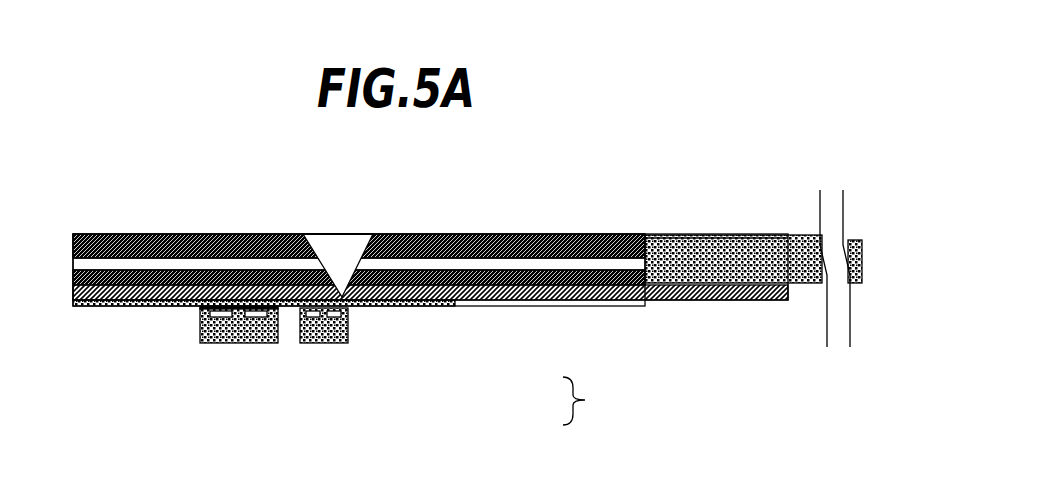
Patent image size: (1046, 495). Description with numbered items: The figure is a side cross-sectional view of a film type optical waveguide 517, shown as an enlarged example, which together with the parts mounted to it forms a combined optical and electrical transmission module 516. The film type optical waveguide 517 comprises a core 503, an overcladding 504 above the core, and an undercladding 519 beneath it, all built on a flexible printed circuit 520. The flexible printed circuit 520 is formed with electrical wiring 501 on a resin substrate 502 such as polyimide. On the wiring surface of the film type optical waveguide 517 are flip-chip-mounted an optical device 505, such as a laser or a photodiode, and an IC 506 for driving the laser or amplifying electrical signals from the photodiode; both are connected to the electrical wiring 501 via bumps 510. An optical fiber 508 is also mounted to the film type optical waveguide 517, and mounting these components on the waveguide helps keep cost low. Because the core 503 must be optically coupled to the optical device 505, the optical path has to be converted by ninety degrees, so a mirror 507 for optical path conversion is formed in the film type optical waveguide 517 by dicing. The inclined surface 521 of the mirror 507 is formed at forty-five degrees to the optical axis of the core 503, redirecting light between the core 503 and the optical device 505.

The electrical wiring 501 is at (445, 305).
The resin substrate 502 is at (488, 300).
The core 503 is at (500, 235).
The overcladding 504 is at (415, 235).
The optical device 505 is at (348, 343).
The IC 506 is at (253, 343).
The mirror for optical path conversion 507 is at (357, 237).
The optical fiber 508 is at (663, 235).
The bumps 510 is at (200, 323).
The combined optical and electrical transmission module 516 is at (608, 200).
The film type optical waveguide 517 is at (182, 213).
The undercladding 519 is at (642, 300).
The flexible printed circuit 520 is at (599, 401).
The inclined surface 521 is at (325, 238).